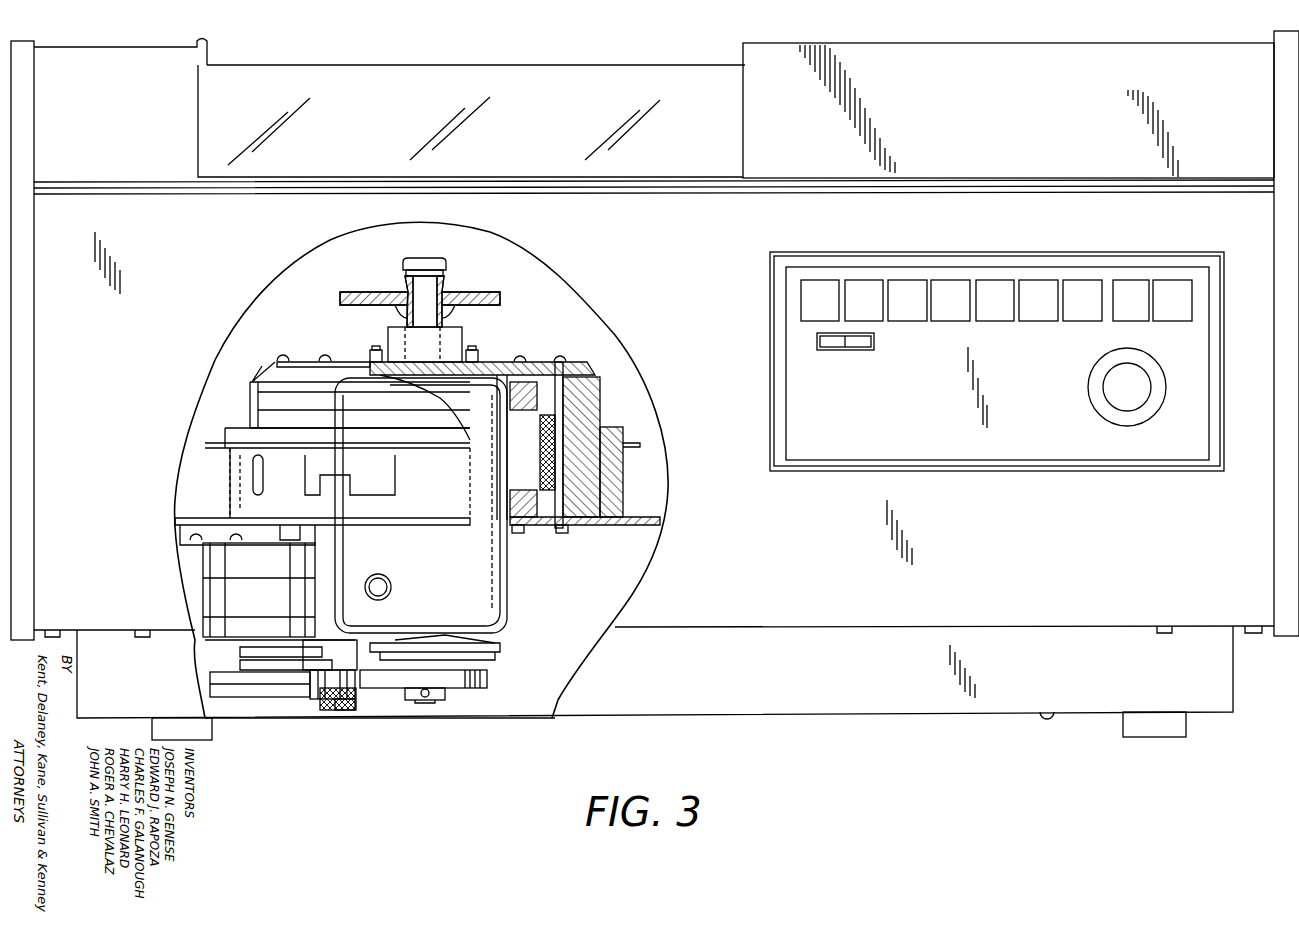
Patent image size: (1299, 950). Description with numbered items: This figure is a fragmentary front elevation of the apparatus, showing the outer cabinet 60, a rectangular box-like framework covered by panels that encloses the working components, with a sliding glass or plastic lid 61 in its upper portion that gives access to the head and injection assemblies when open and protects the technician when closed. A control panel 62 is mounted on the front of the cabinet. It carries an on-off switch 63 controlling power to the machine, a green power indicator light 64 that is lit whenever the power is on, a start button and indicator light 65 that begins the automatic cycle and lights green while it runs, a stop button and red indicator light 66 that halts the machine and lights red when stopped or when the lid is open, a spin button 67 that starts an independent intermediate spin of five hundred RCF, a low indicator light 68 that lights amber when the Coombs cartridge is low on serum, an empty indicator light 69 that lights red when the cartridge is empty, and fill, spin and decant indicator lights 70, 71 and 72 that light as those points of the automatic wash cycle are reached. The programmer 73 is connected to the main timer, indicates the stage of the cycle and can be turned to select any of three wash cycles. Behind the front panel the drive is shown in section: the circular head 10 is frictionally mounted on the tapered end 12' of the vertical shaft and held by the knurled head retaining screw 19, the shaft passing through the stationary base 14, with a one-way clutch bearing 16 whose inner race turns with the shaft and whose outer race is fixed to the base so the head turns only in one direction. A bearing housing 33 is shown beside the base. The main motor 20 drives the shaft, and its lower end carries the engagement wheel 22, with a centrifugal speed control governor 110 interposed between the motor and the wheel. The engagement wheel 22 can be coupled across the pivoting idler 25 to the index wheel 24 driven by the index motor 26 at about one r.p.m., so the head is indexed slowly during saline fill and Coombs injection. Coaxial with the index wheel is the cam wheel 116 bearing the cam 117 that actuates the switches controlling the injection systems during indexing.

The head 10 is at (466, 300).
The tapered end 12' is at (399, 323).
The stationary base 14 is at (540, 362).
The one-way clutch bearing 16 is at (462, 339).
The knurled head retaining screw 19 is at (412, 258).
The main motor 20 is at (475, 580).
The engagement wheel 22 is at (480, 676).
The index wheel 24 is at (260, 690).
The pivoting idler 25 is at (352, 702).
The index motor 26 is at (245, 590).
The bearing housing 33 is at (590, 393).
The outer cabinet 60 is at (1250, 222).
The sliding lid 61 is at (541, 80).
The control panel 62 is at (926, 426).
The on-off switch 63 is at (855, 344).
The power indicator light 64 is at (815, 291).
The start button and indicator light 65 is at (858, 291).
The stop button and red indicator light 66 is at (903, 291).
The spin button 67 is at (944, 291).
The low indicator light 68 is at (989, 291).
The empty indicator light 69 is at (1036, 291).
The fill indicator light 70 is at (1082, 291).
The spin indicator light 71 is at (1127, 291).
The decant indicator light 72 is at (1173, 291).
The programmer 73 is at (1120, 386).
The centrifugal speed control governor 110 is at (470, 645).
The cam wheel 116 is at (228, 672).
The cam 117 is at (250, 659).